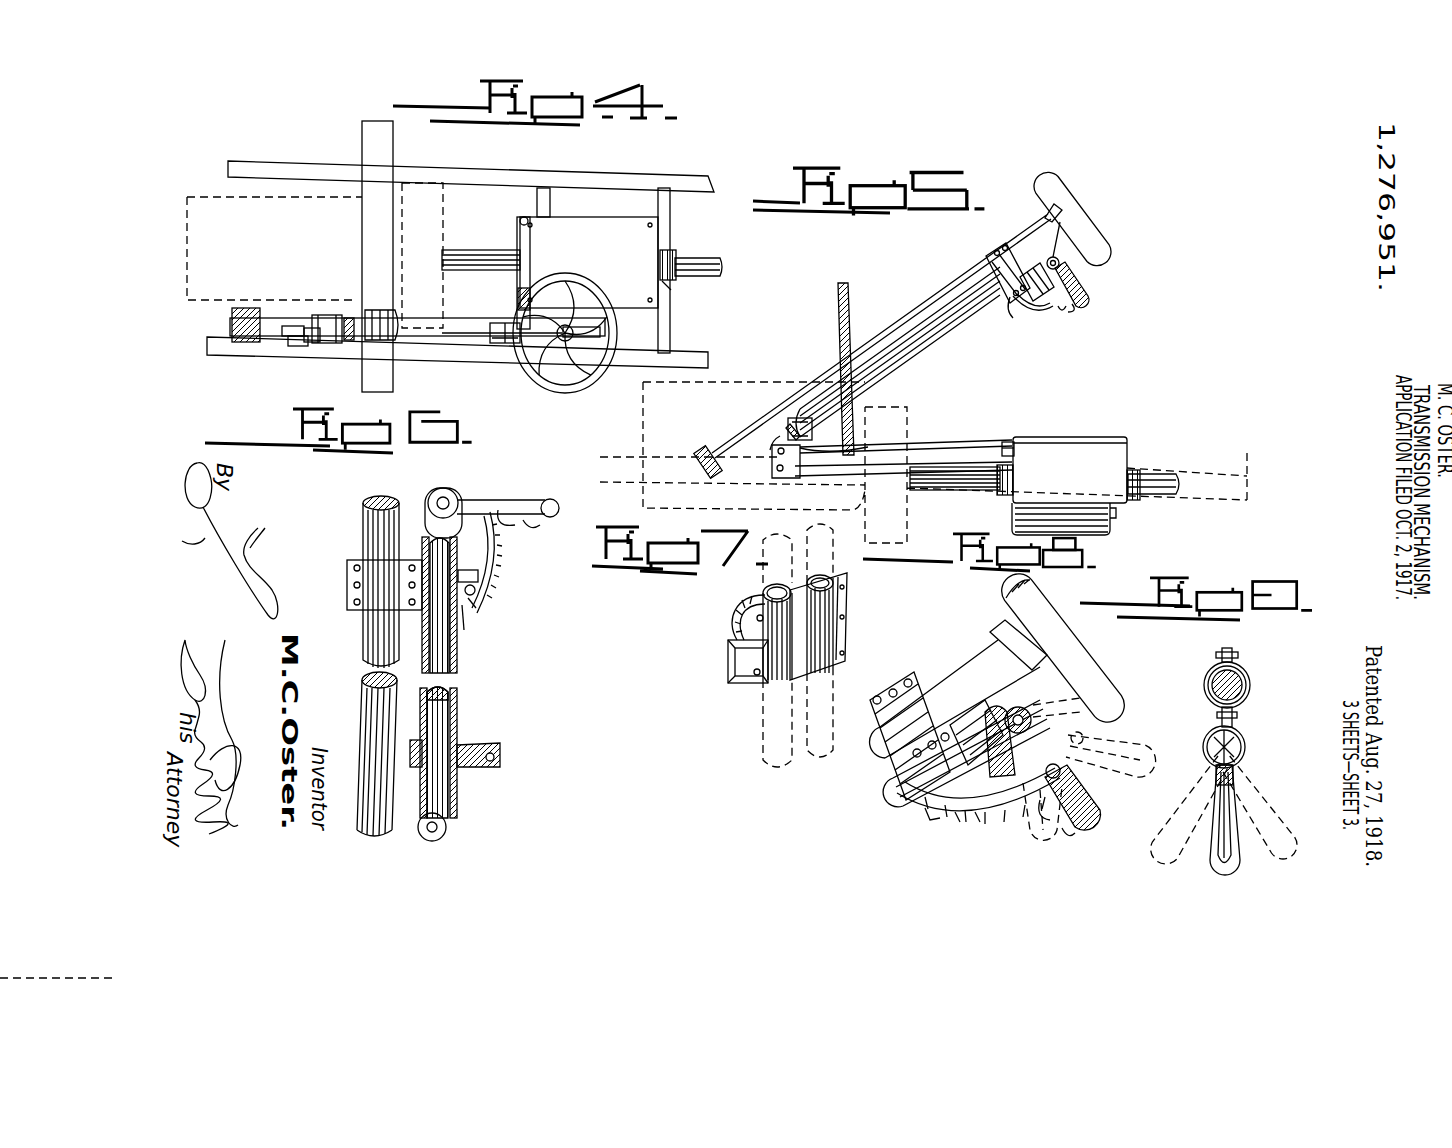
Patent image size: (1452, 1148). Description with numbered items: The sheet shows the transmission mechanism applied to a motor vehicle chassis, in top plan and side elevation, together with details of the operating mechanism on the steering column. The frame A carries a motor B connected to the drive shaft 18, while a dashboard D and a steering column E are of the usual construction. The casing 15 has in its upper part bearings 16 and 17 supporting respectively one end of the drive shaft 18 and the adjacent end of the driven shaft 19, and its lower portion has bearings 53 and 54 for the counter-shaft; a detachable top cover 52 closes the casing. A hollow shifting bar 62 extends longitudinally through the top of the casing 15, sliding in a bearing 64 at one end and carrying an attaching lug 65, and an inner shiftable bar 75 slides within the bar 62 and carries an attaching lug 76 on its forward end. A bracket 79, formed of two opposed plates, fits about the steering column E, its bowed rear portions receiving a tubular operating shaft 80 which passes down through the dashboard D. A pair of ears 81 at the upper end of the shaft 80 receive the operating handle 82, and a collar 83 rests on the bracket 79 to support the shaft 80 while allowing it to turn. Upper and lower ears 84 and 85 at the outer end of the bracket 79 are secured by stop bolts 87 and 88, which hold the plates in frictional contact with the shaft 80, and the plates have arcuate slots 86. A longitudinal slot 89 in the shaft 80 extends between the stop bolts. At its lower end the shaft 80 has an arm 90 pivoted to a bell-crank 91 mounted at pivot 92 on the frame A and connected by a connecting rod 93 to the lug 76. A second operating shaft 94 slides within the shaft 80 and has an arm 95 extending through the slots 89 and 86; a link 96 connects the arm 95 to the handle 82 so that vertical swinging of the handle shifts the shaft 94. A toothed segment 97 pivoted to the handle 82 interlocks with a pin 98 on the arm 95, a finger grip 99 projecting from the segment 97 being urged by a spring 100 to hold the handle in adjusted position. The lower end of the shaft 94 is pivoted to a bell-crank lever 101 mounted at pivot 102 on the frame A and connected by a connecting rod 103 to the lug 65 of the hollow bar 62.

In FIG. 5, the casing 15 is at (1080, 458).
In FIG. 5, the bearing 16 is at (1013, 470).
In FIG. 4, the bearing 17 is at (670, 282).
In FIG. 5, the bearing 17 is at (1140, 502).
In FIG. 4, the drive shaft 18 is at (481, 251).
In FIG. 5, the drive shaft 18 is at (962, 480).
In FIG. 4, the driven shaft 19 is at (722, 266).
In FIG. 5, the driven shaft 19 is at (1181, 487).
In FIG. 4, the top cover 52 is at (589, 262).
In FIG. 5, the top cover 52 is at (1100, 437).
In FIG. 5, the bearing 53 is at (1012, 510).
In FIG. 5, the bearing 54 is at (1118, 513).
In FIG. 5, the hollow shifting bar 62 is at (1013, 444).
In FIG. 4, the bearing 64 is at (667, 290).
In FIG. 5, the bearing 64 is at (1130, 458).
In FIG. 5, the attaching lug 65 is at (1018, 453).
In FIG. 5, the inner shiftable bar 75 is at (1011, 442).
In FIG. 4, the attaching lug 76 is at (517, 291).
In FIG. 4, the bracket 79 is at (510, 345).
In FIG. 5, the bracket 79 is at (998, 250).
In FIG. 6, the bracket 79 is at (348, 584).
In FIG. 7, the bracket 79 is at (827, 667).
In FIG. 8, the bracket 79 is at (902, 682).
In FIG. 9, the bracket 79 is at (1235, 658).
In FIG. 5, the tubular operating shaft 80 is at (945, 345).
In FIG. 6, the tubular operating shaft 80 is at (453, 737).
In FIG. 7, the tubular operating shaft 80 is at (764, 724).
In FIG. 8, the tubular operating shaft 80 is at (893, 797).
In FIG. 5, the ears 81 is at (1058, 261).
In FIG. 6, the ears 81 is at (450, 492).
In FIG. 8, the ears 81 is at (1024, 709).
In FIG. 9, the ears 81 is at (1237, 727).
In FIG. 4, the operating handle 82 is at (600, 337).
In FIG. 5, the operating handle 82 is at (1080, 300).
In FIG. 6, the operating handle 82 is at (552, 502).
In FIG. 8, the operating handle 82 is at (1135, 775).
In FIG. 9, the operating handle 82 is at (1285, 836).
In FIG. 5, the collar 83 is at (1030, 272).
In FIG. 6, the collar 83 is at (424, 548).
In FIG. 8, the collar 83 is at (973, 715).
In FIG. 9, the collar 83 is at (1246, 746).
In FIG. 7, the upper ears 84 is at (730, 628).
In FIG. 8, the upper ears 84 is at (1000, 740).
In FIG. 7, the lower ears 85 is at (740, 673).
In FIG. 8, the lower ears 85 is at (927, 810).
In FIG. 7, the arcuate slots 86 is at (732, 645).
In FIG. 7, the stop bolt 87 is at (766, 603).
In FIG. 7, the stop bolt 88 is at (756, 676).
In FIG. 6, the slot 89 is at (466, 610).
In FIG. 5, the arm 90 is at (805, 416).
In FIG. 6, the arm 90 is at (470, 768).
In FIG. 4, the bell-crank 91 is at (348, 342).
In FIG. 5, the bell-crank 91 is at (792, 420).
In FIG. 4, the pivot 92 is at (312, 343).
In FIG. 5, the pivot 92 is at (849, 438).
In FIG. 5, the connecting rod 93 is at (934, 452).
In FIG. 4, the second operating shaft 94 is at (330, 318).
In FIG. 5, the second operating shaft 94 is at (795, 435).
In FIG. 6, the second operating shaft 94 is at (450, 703).
In FIG. 6, the arm 95 is at (476, 606).
In FIG. 8, the arm 95 is at (957, 812).
In FIG. 5, the link 96 is at (1047, 307).
In FIG. 6, the link 96 is at (492, 555).
In FIG. 8, the link 96 is at (988, 816).
In FIG. 5, the segment 97 is at (1060, 268).
In FIG. 6, the segment 97 is at (477, 594).
In FIG. 8, the segment 97 is at (1074, 731).
In FIG. 5, the pin 98 is at (1017, 318).
In FIG. 6, the pin 98 is at (478, 585).
In FIG. 8, the pin 98 is at (978, 816).
In FIG. 5, the finger grip 99 is at (1062, 310).
In FIG. 6, the finger grip 99 is at (520, 505).
In FIG. 8, the finger grip 99 is at (1040, 825).
In FIG. 5, the spring 100 is at (1076, 308).
In FIG. 6, the spring 100 is at (540, 520).
In FIG. 8, the spring 100 is at (1073, 832).
In FIG. 4, the bell-crank lever 101 is at (290, 337).
In FIG. 5, the bell-crank lever 101 is at (782, 472).
In FIG. 4, the pivot 102 is at (298, 348).
In FIG. 5, the pivot 102 is at (786, 466).
In FIG. 5, the connecting rod 103 is at (947, 472).
In FIG. 4, the frame A is at (660, 178).
In FIG. 5, the frame A is at (1247, 476).
In FIG. 4, the motor B is at (214, 206).
In FIG. 5, the motor B is at (648, 435).
In FIG. 4, the dashboard D is at (388, 157).
In FIG. 5, the dashboard D is at (848, 316).
In FIG. 4, the steering column E is at (455, 335).
In FIG. 5, the steering column E is at (905, 322).
In FIG. 6, the steering column E is at (375, 528).
In FIG. 7, the steering column E is at (822, 747).
In FIG. 8, the steering column E is at (885, 757).
In FIG. 9, the steering column E is at (1246, 681).